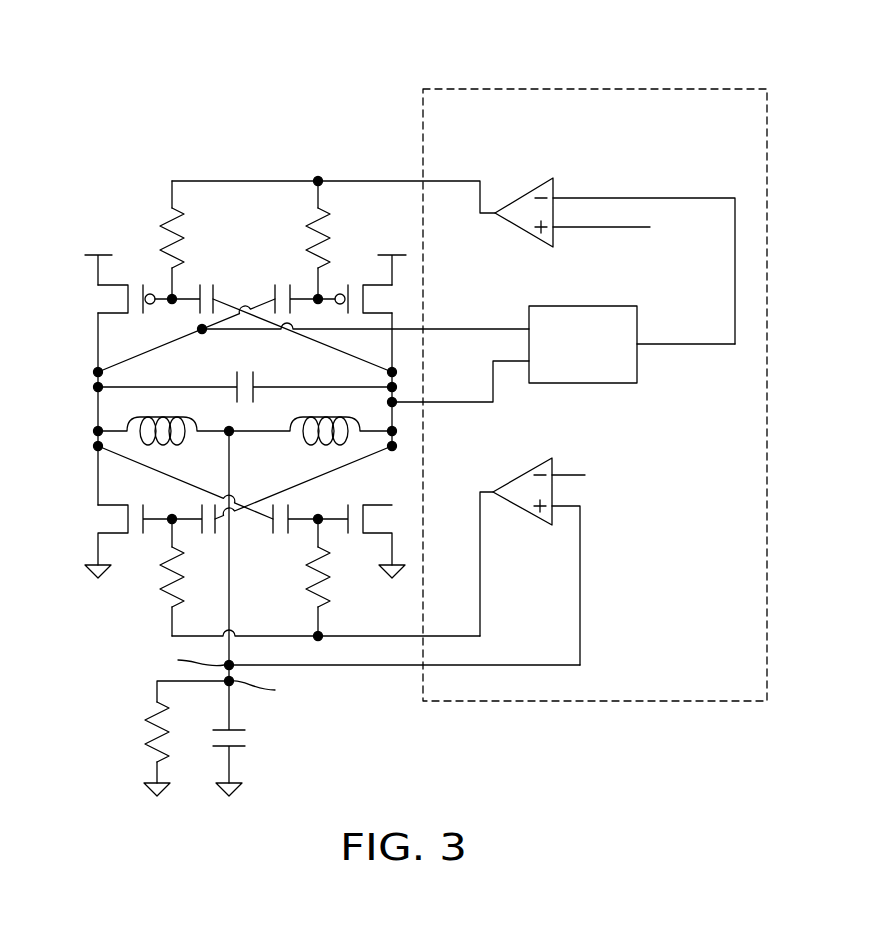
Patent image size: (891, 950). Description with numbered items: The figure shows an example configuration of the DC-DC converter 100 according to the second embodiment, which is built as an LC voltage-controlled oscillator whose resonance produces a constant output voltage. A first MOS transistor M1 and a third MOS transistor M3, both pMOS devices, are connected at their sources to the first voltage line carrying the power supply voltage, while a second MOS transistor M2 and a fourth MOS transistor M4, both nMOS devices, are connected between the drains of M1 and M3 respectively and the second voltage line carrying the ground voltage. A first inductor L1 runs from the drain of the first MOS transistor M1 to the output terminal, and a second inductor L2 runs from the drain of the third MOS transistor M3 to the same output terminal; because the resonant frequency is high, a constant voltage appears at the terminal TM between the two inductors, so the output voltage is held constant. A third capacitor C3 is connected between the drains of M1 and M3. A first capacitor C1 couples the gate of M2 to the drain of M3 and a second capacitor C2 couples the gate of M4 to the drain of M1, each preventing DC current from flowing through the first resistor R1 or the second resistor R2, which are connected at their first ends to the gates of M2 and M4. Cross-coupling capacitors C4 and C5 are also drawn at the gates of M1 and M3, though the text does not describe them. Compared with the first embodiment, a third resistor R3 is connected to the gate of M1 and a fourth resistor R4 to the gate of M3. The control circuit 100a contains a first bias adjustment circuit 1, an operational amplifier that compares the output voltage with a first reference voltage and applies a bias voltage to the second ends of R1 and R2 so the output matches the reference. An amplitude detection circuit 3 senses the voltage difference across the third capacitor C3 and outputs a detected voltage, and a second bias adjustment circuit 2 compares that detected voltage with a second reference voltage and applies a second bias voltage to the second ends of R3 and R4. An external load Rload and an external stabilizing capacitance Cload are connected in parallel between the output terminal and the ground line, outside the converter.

The DC-DC converter 100 is at (78, 125).
The control circuit 100a is at (767, 175).
The first bias adjustment circuit 1 is at (533, 466).
The second bias adjustment circuit 2 is at (525, 192).
The amplitude detection circuit 3 is at (581, 306).
The first MOS transistor M1 is at (120, 286).
The second MOS transistor M2 is at (124, 506).
The third MOS transistor M3 is at (372, 283).
The fourth MOS transistor M4 is at (376, 505).
The first resistor R1 is at (160, 560).
The second resistor R2 is at (326, 558).
The third resistor R3 is at (168, 210).
The fourth resistor R4 is at (314, 210).
The first capacitor C1 is at (203, 534).
The second capacitor C2 is at (272, 534).
The third capacitor C3 is at (255, 380).
The capacitor C4 is at (215, 284).
The capacitor C5 is at (274, 284).
The first inductor L1 is at (136, 416).
The second inductor L2 is at (322, 414).
The terminal TM is at (232, 436).
The external load Rload is at (152, 714).
The external capacitance Cload is at (246, 730).